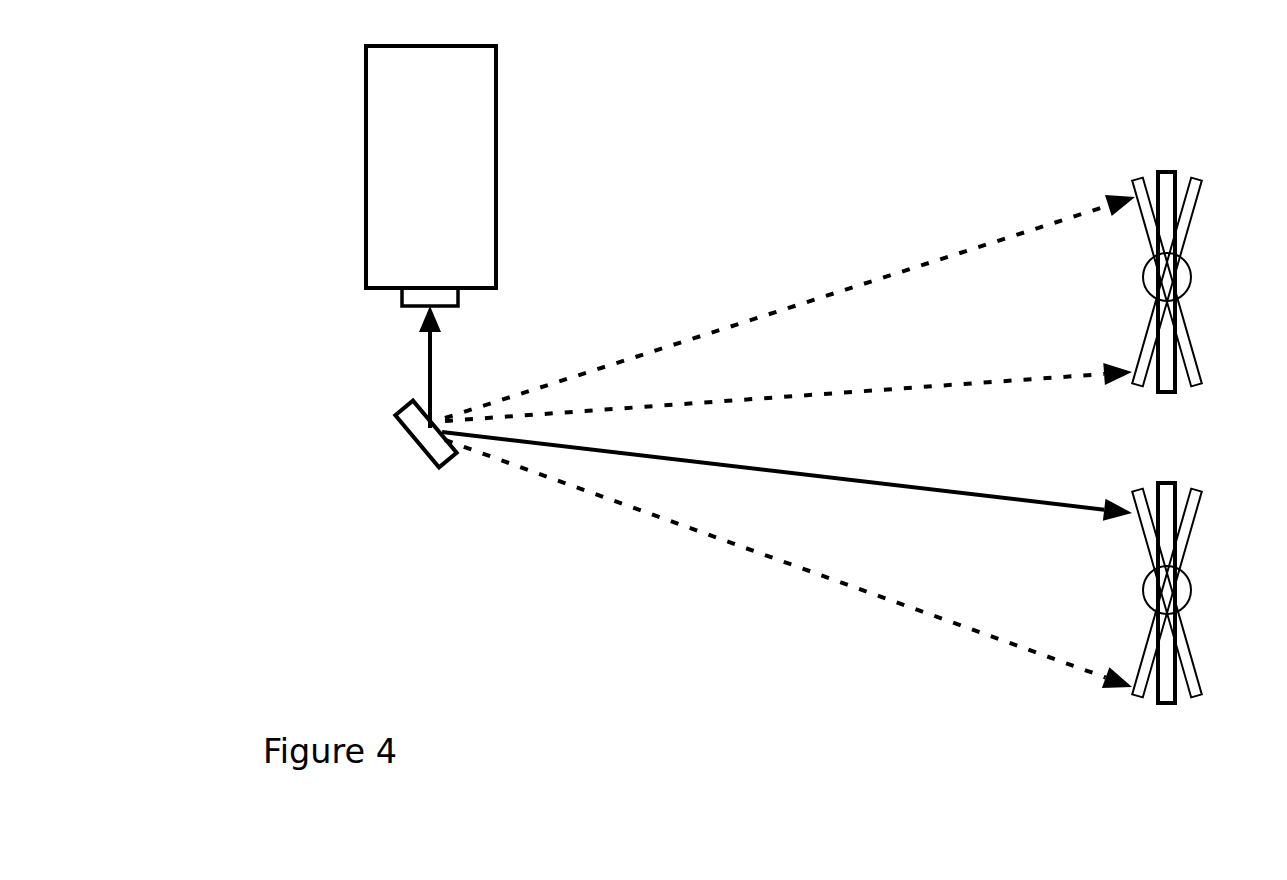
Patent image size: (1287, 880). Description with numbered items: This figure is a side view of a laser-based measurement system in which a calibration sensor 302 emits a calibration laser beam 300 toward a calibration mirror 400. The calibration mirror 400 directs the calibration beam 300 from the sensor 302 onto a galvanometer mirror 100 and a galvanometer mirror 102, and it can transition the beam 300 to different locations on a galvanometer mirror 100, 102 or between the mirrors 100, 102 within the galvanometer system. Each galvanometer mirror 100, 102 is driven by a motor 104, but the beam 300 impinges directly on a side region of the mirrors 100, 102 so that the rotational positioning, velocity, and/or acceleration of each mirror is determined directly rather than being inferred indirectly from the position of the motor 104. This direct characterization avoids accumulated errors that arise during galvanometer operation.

The calibration sensor 302 is at (431, 237).
The calibration mirror 400 is at (403, 427).
The calibration laser beam 300 is at (988, 498).
The galvanometer mirror 100 is at (1170, 170).
The galvanometer mirror 102 is at (1172, 483).
The motor 104 is at (1191, 280).